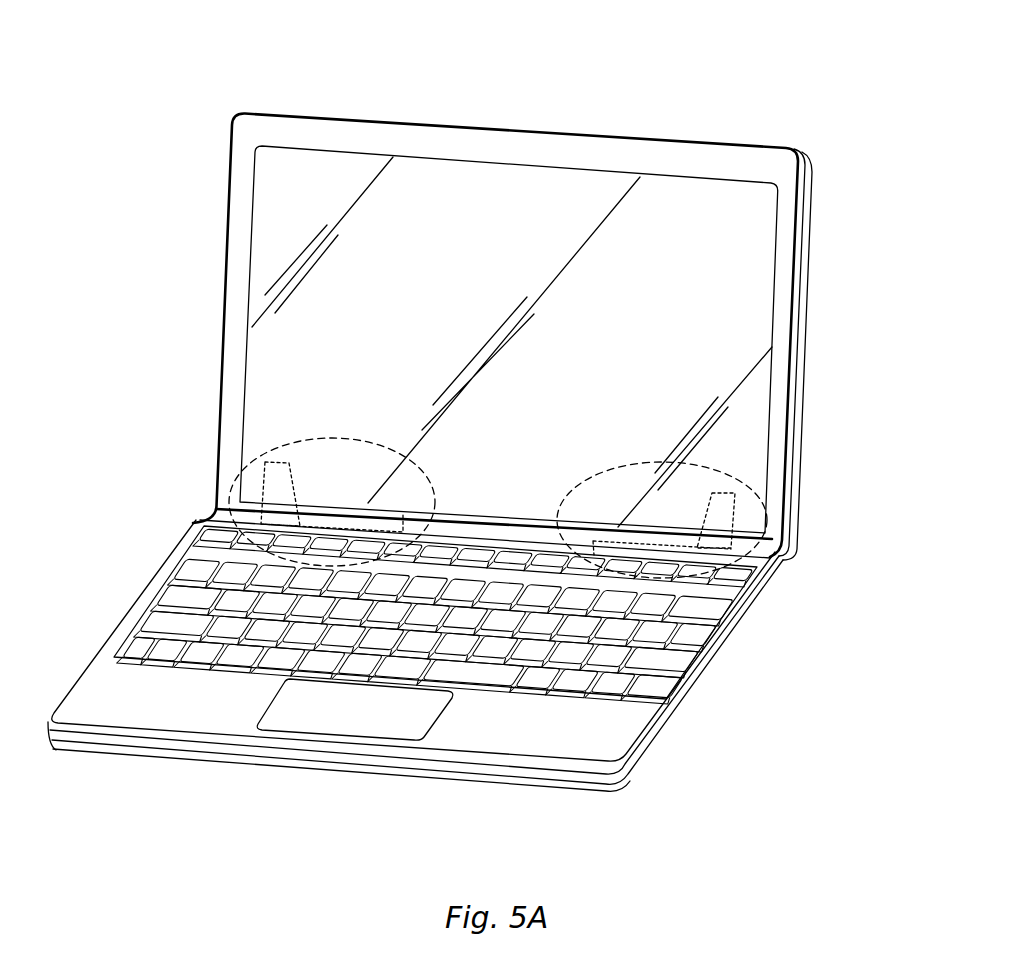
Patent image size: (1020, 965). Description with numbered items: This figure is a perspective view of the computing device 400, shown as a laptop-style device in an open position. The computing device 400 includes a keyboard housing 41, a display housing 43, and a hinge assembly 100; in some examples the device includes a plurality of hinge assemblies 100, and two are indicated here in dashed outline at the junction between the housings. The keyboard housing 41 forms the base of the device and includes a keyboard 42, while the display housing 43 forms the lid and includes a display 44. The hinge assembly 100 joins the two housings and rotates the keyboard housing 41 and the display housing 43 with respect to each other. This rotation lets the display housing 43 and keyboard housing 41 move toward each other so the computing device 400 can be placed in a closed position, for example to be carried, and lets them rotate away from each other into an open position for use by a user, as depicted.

The computing device 400 is at (504, 7).
The display housing 43 is at (788, 206).
The display 44 is at (478, 213).
The hinge assembly 100 is at (257, 450).
The keyboard 42 is at (688, 670).
The keyboard housing 41 is at (602, 742).